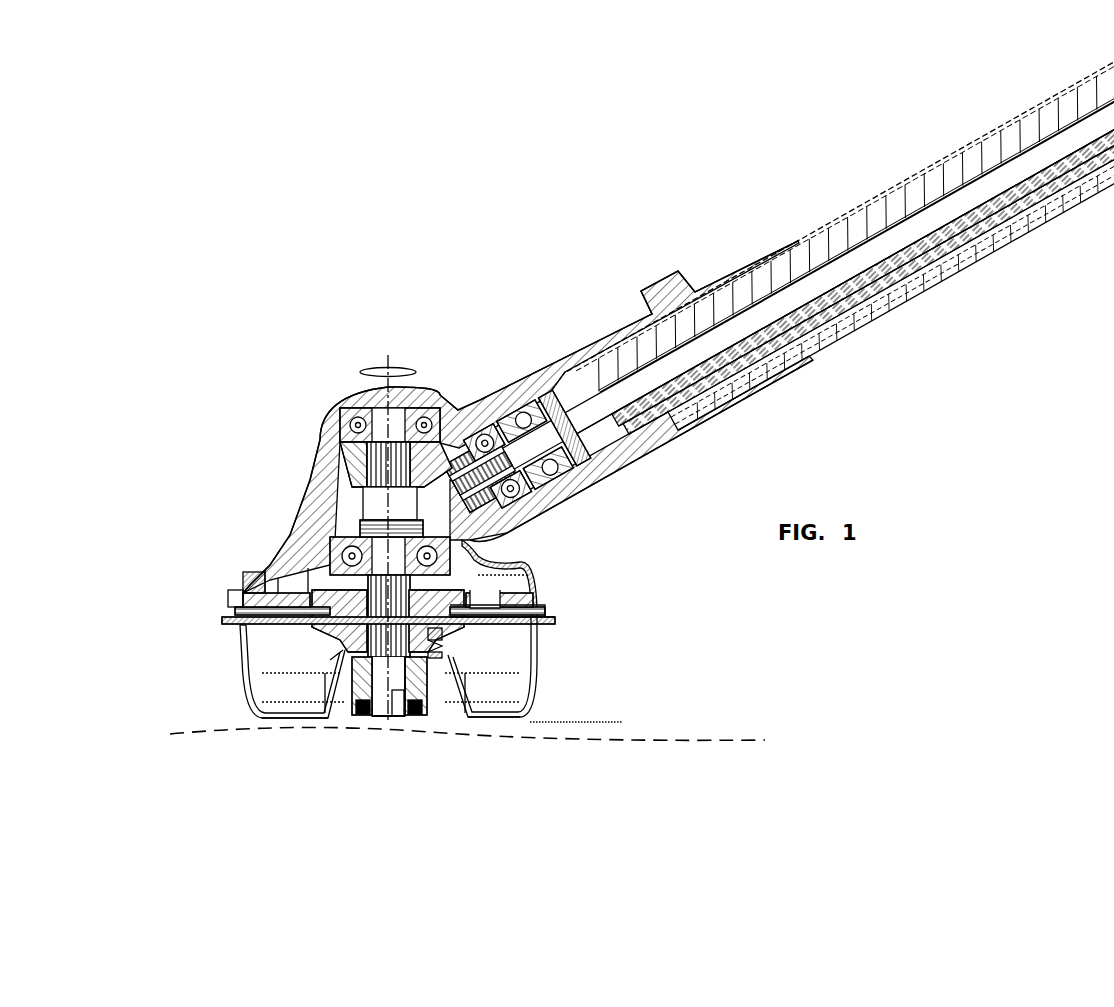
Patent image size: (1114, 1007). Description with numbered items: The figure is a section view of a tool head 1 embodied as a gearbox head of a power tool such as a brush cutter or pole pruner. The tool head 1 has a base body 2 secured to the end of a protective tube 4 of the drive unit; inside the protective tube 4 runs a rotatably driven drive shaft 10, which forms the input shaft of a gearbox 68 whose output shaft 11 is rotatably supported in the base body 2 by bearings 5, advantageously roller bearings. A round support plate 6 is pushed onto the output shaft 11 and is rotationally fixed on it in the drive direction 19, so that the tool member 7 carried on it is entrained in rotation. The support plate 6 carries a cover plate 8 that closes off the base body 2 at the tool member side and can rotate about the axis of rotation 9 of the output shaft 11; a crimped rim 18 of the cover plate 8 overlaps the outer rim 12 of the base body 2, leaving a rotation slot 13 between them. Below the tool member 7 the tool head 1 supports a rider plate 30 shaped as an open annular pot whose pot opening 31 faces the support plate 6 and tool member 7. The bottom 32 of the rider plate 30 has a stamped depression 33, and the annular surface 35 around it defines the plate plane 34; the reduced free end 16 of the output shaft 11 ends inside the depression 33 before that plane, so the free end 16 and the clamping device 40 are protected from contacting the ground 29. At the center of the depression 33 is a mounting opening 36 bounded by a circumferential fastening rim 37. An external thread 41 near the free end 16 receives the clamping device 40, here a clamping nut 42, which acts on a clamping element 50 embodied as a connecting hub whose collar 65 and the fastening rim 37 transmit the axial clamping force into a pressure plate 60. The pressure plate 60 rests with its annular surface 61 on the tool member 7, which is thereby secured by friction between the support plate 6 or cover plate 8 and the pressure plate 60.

The tool head 1 is at (207, 347).
The base body 2 is at (296, 502).
The protective tube 4 is at (800, 236).
The bearings 5 is at (340, 553).
The support plate 6 is at (310, 597).
The tool member 7 is at (222, 622).
The cover plate 8 is at (490, 620).
The axis of rotation 9 is at (388, 361).
The drive shaft 10 is at (755, 320).
The output shaft 11 is at (396, 489).
The outer rim 12 is at (243, 592).
The rotation slot 13 is at (235, 590).
The free end 16 is at (380, 700).
The crimped rim 18 is at (232, 604).
The drive direction 19 is at (382, 371).
The ground 29 is at (612, 742).
The rider plate 30 is at (245, 680).
The pot opening 31 is at (262, 630).
The bottom 32 is at (320, 727).
The depression 33 is at (445, 696).
The plate plane 34 is at (534, 723).
The annular surface 35 is at (485, 722).
The mounting opening 36 is at (440, 654).
The fastening rim 37 is at (440, 647).
The clamping device 40 is at (356, 717).
The external thread 41 is at (397, 693).
The clamping nut 42 is at (420, 718).
The clamping element 50 is at (558, 620).
The pressure plate 60 is at (443, 640).
The annular surface 61 is at (463, 607).
The collar 65 is at (343, 652).
The gearbox 68 is at (440, 438).